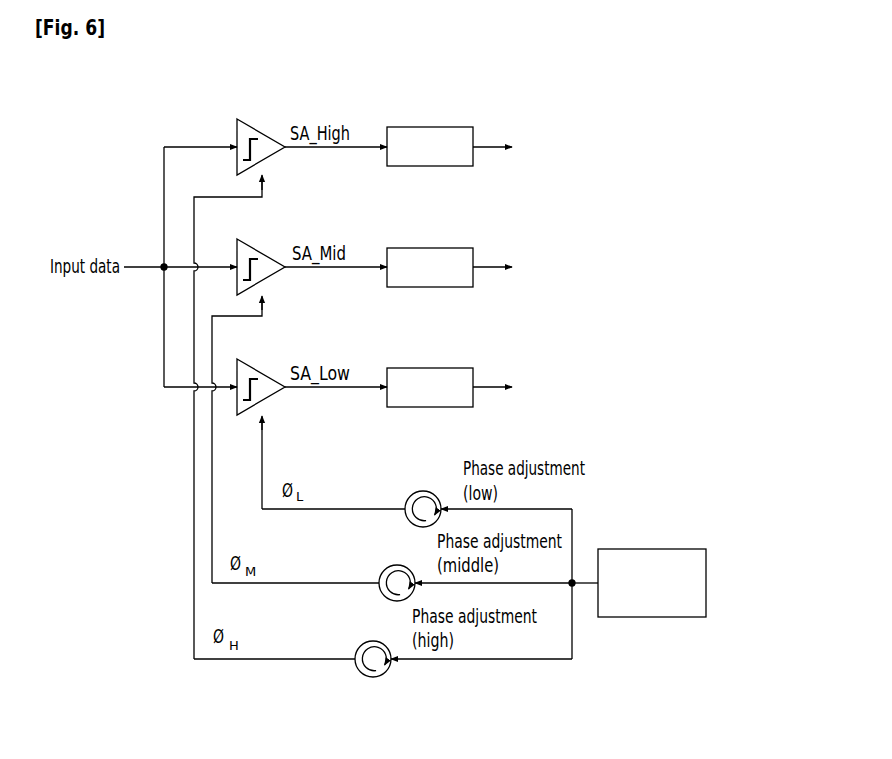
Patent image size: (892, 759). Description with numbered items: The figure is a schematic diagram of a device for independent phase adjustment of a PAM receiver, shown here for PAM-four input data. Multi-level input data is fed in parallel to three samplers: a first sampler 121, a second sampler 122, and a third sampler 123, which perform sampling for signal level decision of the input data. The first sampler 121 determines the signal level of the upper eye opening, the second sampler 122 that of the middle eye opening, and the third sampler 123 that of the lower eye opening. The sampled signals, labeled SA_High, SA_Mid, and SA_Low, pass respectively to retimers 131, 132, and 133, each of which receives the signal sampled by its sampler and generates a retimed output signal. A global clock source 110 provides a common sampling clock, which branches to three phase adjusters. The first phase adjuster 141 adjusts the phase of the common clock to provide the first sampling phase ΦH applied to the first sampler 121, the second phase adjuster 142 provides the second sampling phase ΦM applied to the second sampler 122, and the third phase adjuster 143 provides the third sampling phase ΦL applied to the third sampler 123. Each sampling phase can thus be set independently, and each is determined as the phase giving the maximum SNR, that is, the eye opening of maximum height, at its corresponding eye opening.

The global clock source 110 is at (683, 617).
The first sampler 121 is at (278, 151).
The second sampler 122 is at (278, 271).
The third sampler 123 is at (278, 391).
The retimer 131 is at (473, 127).
The retimer 132 is at (473, 248).
The retimer 133 is at (473, 368).
The first phase adjuster 141 is at (359, 646).
The second phase adjuster 142 is at (384, 570).
The third phase adjuster 143 is at (409, 496).